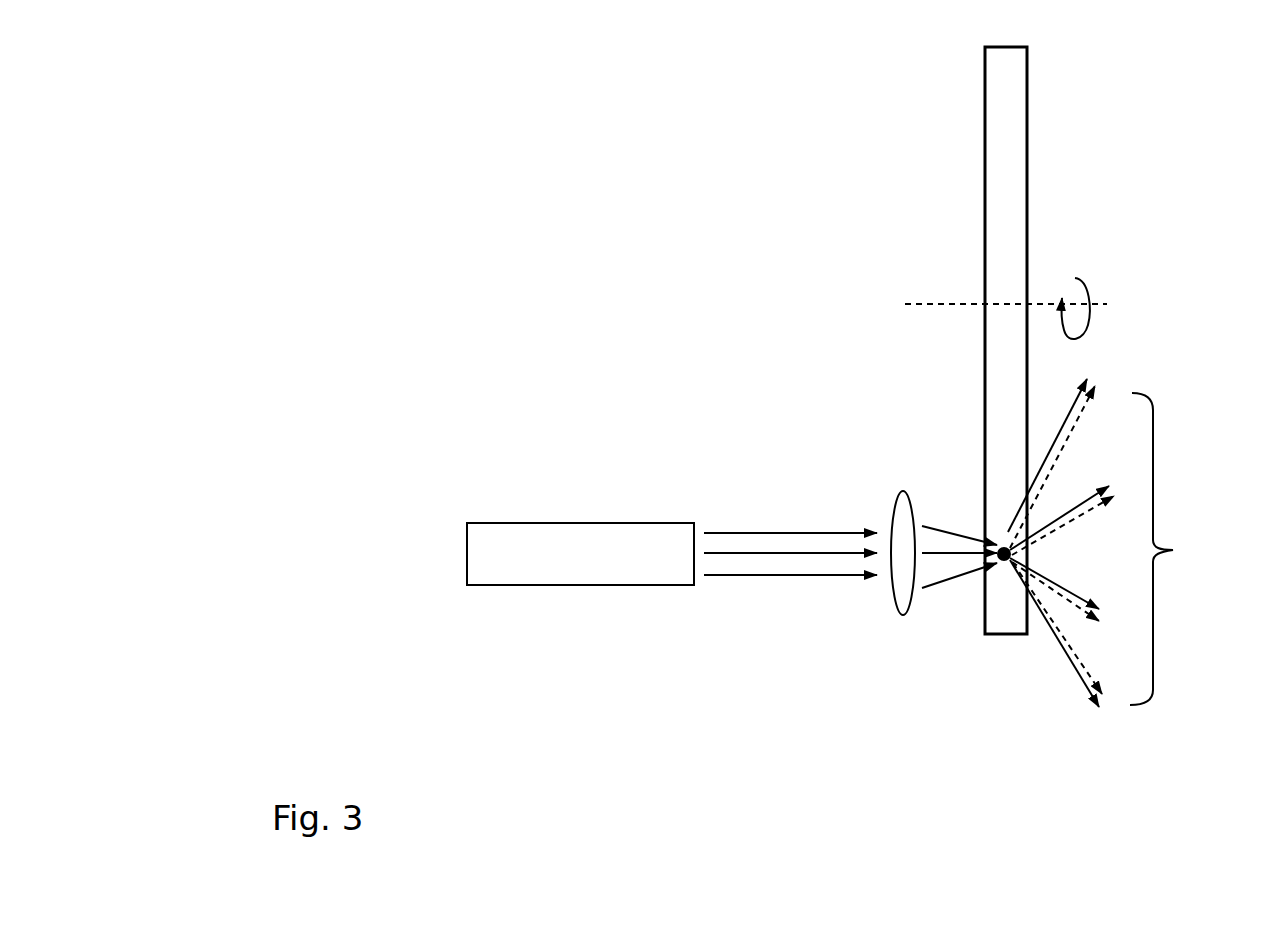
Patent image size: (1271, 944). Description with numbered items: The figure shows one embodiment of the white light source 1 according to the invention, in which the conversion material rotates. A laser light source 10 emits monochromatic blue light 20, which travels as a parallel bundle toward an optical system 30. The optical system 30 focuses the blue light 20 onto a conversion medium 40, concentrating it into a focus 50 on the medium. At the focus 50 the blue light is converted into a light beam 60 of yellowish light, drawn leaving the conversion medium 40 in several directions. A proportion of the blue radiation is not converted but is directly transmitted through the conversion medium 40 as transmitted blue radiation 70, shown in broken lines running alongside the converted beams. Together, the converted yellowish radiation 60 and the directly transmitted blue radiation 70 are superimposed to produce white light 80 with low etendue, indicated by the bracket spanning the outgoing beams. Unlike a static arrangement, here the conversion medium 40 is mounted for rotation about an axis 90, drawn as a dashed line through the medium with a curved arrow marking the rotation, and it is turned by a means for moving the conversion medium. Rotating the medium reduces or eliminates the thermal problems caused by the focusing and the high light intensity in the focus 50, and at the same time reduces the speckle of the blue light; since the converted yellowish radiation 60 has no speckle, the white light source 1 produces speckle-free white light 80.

The white light source 1 is at (778, 316).
The laser light source 10 is at (569, 524).
The monochromatic blue light 20 is at (780, 529).
The optical system 30 is at (887, 597).
The conversion medium 40 is at (1017, 639).
The focus 50 is at (1002, 573).
The light beam of yellowish light 60 is at (1093, 402).
The directly transmitted blue radiation 70 is at (1104, 712).
The white light 80 is at (1128, 549).
The axis 90 is at (1085, 264).